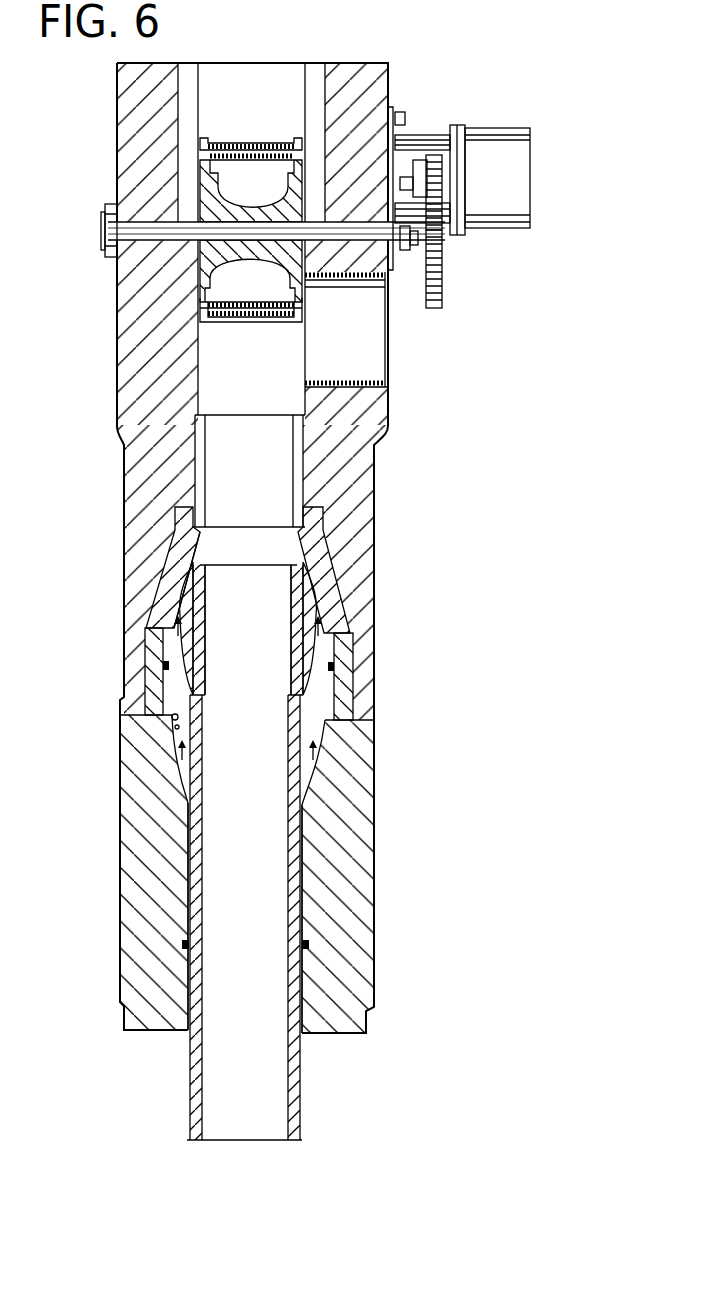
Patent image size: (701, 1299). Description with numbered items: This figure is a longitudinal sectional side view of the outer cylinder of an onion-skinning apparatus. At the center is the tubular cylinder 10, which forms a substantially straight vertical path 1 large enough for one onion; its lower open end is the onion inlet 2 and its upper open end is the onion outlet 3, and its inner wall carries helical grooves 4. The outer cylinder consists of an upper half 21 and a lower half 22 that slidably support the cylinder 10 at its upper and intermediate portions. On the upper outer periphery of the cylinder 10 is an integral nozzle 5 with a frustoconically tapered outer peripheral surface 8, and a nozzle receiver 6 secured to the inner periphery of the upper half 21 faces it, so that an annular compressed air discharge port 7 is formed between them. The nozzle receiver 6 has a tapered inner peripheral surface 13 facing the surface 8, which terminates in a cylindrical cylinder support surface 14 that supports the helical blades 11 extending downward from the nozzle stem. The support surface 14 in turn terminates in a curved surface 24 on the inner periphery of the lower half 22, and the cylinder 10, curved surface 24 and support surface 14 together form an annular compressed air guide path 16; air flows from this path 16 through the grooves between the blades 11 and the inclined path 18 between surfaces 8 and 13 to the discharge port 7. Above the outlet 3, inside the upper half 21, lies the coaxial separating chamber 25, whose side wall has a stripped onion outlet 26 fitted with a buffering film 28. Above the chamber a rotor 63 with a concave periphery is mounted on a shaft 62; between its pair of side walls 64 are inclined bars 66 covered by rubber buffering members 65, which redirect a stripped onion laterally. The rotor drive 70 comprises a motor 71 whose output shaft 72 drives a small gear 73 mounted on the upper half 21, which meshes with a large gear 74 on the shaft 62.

The path 1 is at (233, 894).
The onion inlet 2 is at (272, 1142).
The onion outlet 3 is at (252, 563).
The helical grooves 4 is at (196, 722).
The nozzle 5 is at (196, 614).
The nozzle receiver 6 is at (155, 608).
The compressed air discharge port 7 is at (200, 563).
The outer peripheral surface 8 is at (190, 590).
The tubular cylinder 10 is at (306, 887).
The helical blades 11 is at (194, 680).
The tapered inner peripheral surface 13 is at (193, 578).
The cylinder support surface 14 is at (173, 725).
The compressed air guide path 16 is at (313, 714).
The inclined path 18 is at (318, 608).
The upper half 21 is at (375, 535).
The lower half 22 is at (375, 823).
The curved surface 24 is at (175, 737).
The separating chamber 25 is at (265, 372).
The stripped onion outlet 26 is at (370, 332).
The buffering film 28 is at (340, 380).
The shaft 62 is at (357, 235).
The rotor 63 is at (245, 207).
The side walls 64 is at (205, 140).
The buffering members 65 is at (270, 143).
The bars 66 is at (243, 143).
The rotor drive 70 is at (496, 114).
The motor 71 is at (480, 128).
The output shaft 72 is at (448, 170).
The small gear 73 is at (433, 157).
The large gear 74 is at (440, 310).